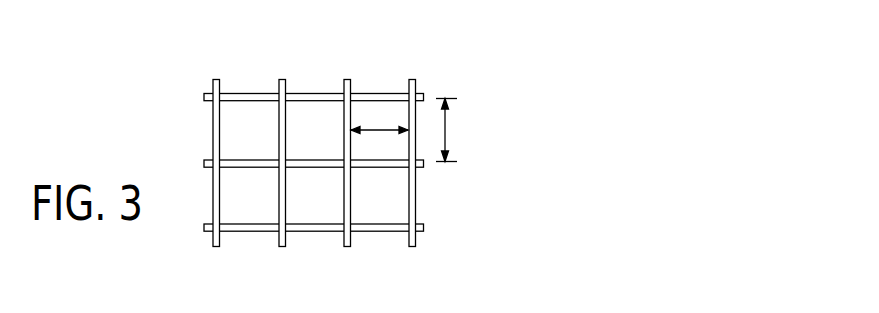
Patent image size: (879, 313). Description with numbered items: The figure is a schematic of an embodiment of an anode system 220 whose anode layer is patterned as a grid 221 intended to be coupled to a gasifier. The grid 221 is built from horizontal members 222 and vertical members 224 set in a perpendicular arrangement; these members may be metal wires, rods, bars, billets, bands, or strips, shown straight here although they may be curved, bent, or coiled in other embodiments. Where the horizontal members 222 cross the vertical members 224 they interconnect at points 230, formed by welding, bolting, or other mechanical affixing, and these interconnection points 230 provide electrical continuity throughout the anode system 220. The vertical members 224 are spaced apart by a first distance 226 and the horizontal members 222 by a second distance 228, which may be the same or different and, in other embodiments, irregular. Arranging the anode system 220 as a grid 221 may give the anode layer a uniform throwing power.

The anode system 220 is at (364, 149).
The grid 221 is at (369, 150).
The horizontal members 222 is at (315, 232).
The vertical members 224 is at (416, 195).
The first distance 226 is at (378, 130).
The second distance 228 is at (447, 128).
The interconnection points 230 is at (351, 168).